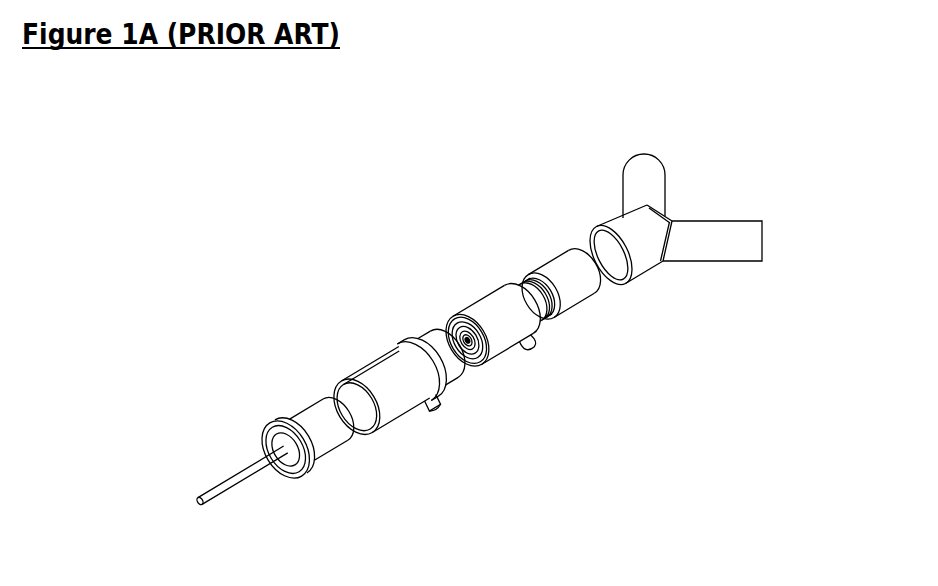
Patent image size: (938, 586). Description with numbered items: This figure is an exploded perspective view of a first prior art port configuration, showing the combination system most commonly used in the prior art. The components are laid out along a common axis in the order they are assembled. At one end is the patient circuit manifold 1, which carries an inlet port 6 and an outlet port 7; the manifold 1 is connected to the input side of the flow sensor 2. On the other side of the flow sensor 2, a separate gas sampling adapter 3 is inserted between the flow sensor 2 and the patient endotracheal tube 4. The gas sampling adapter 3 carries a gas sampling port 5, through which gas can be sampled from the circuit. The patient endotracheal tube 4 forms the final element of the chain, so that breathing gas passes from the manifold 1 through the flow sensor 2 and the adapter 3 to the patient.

The patient circuit manifold 1 is at (612, 216).
The flow sensor 2 is at (520, 278).
The gas sampling adapter 3 is at (378, 350).
The patient endotracheal tube 4 is at (253, 455).
The gas sampling port 5 is at (443, 407).
The inlet port 6 is at (773, 240).
The outlet port 7 is at (648, 148).